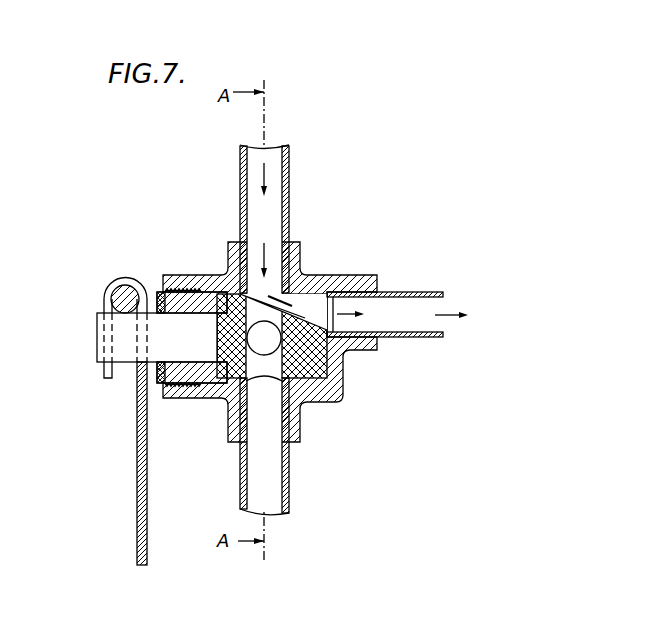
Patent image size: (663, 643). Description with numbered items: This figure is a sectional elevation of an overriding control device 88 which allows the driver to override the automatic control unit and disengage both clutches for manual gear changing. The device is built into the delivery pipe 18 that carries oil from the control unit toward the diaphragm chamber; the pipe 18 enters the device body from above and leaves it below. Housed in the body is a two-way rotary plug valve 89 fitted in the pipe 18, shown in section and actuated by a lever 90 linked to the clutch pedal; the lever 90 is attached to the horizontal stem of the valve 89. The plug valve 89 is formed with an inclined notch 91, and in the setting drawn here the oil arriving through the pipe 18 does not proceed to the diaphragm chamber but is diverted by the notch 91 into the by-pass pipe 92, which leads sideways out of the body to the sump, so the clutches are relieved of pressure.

The delivery pipe 18 is at (277, 178).
The overriding control device 88 is at (216, 290).
The two-way rotary plug valve 89 is at (165, 383).
The lever 90 is at (140, 470).
The inclined notch 91 is at (293, 310).
The by-pass pipe 92 is at (393, 305).